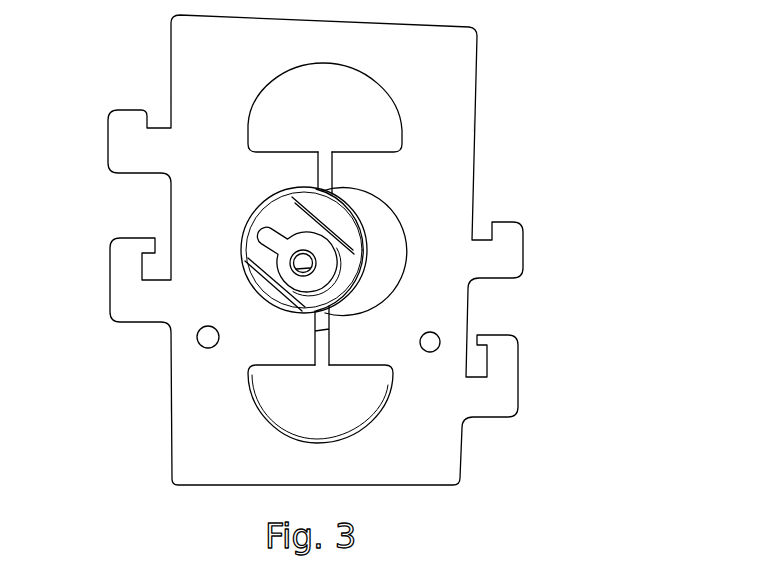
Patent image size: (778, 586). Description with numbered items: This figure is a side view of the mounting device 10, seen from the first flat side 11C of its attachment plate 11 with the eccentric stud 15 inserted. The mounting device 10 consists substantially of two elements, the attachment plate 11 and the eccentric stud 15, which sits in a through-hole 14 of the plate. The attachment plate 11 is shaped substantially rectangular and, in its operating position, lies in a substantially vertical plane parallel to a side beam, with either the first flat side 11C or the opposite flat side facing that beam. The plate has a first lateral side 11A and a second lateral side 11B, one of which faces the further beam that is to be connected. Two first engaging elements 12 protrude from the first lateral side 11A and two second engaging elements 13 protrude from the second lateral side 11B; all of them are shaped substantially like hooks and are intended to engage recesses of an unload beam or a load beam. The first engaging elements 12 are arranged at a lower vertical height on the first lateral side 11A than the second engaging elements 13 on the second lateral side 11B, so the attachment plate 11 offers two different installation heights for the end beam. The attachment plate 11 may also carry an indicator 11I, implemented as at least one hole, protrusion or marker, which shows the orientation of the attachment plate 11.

The mounting device 10 is at (404, 119).
The attachment plate 11 is at (492, 53).
The first lateral side 11A is at (493, 142).
The second lateral side 11B is at (124, 430).
The first flat side 11C is at (488, 446).
The indicator 11I is at (208, 367).
The first engaging elements 12 is at (533, 225).
The second engaging elements 13 is at (123, 134).
The through-hole 14 is at (415, 203).
The eccentric stud 15 is at (272, 220).